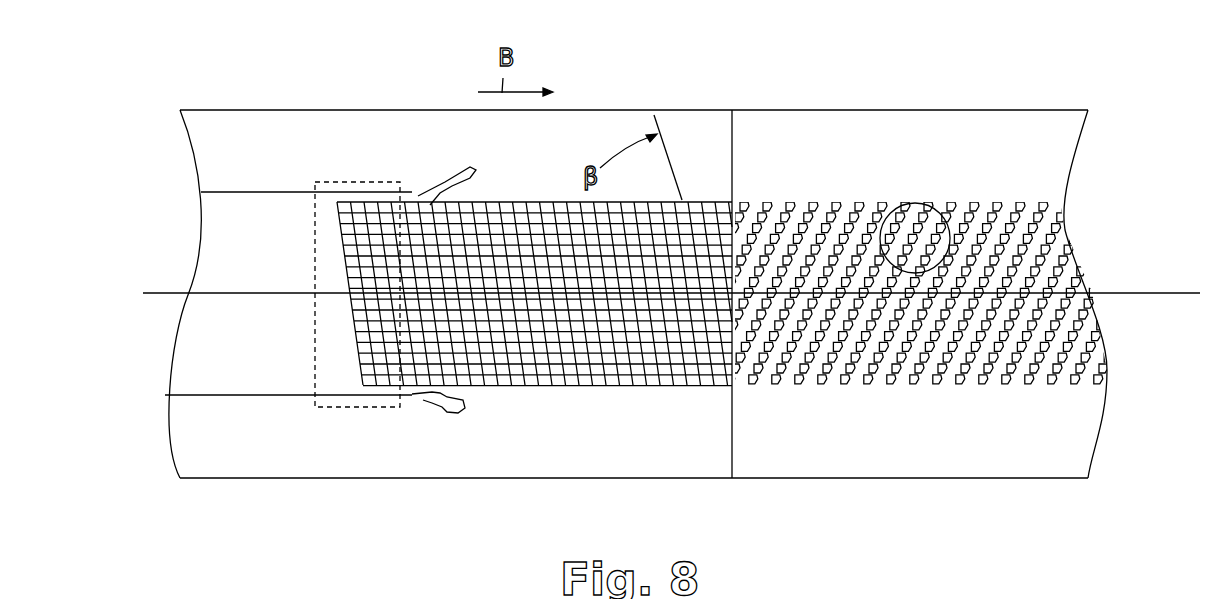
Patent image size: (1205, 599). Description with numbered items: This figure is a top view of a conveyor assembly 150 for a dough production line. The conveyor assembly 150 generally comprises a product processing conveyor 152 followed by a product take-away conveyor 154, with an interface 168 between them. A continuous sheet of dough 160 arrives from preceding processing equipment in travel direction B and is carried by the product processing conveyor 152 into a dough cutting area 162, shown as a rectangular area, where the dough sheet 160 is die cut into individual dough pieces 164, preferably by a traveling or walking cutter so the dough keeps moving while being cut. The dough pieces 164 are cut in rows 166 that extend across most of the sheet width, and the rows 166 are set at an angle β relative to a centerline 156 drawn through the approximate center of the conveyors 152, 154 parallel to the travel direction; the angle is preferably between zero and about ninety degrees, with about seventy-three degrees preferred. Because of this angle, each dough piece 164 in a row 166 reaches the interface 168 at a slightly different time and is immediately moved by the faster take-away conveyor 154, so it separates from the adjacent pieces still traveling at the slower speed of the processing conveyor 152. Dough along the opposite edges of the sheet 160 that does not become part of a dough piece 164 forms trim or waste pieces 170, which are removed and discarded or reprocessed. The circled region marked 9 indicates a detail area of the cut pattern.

The conveyor assembly 150 is at (244, 104).
The product processing conveyor 152 is at (712, 482).
The product take-away conveyor 154 is at (1047, 480).
The centerline 156 is at (1177, 293).
The continuous sheet of dough 160 is at (215, 262).
The dough cutting area 162 is at (316, 382).
The dough pieces 164 is at (418, 200).
The rows 166 is at (642, 202).
The interface 168 is at (733, 478).
The trim or waste pieces 170 is at (447, 405).
The detail area of FIG. 9 is at (935, 205).